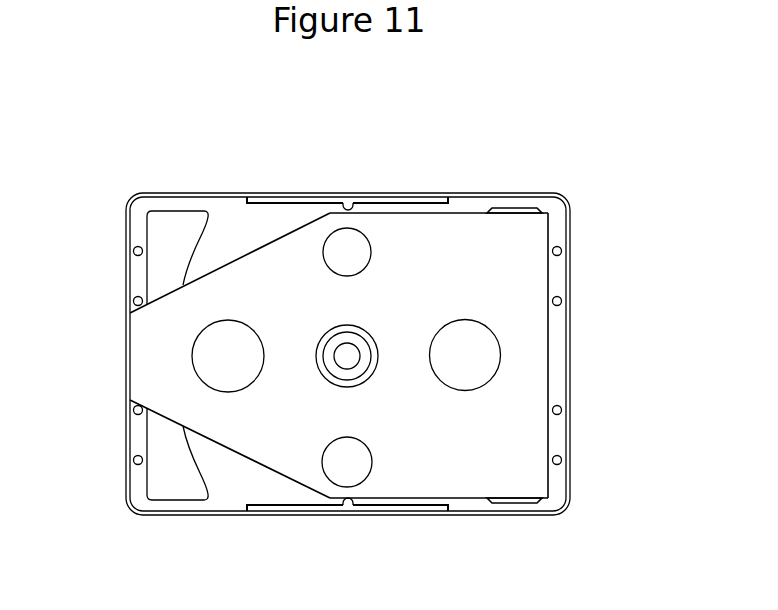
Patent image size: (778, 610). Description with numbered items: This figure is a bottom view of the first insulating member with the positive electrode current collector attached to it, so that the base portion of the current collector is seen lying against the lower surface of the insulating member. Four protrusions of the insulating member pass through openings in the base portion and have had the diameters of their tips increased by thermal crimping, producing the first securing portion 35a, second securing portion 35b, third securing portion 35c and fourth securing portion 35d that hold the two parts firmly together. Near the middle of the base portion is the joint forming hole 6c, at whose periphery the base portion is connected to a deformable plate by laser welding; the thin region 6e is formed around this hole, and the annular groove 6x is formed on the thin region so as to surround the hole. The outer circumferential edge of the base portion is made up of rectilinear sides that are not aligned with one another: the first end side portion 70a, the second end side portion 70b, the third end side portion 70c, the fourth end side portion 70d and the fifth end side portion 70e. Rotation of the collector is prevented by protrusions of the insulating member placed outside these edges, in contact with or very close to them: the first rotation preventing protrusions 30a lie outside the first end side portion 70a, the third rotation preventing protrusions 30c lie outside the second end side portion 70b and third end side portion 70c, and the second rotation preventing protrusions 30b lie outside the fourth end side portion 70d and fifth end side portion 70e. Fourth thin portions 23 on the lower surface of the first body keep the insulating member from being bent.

The fourth thin portion 23 is at (172, 481).
The first rotation preventing protrusion 30a is at (562, 251).
The second rotation preventing protrusion 30b is at (132, 303).
The third rotation preventing protrusion 30c is at (348, 198).
The first securing portion 35a is at (227, 343).
The second securing portion 35b is at (477, 358).
The third securing portion 35c is at (335, 457).
The fourth securing portion 35d is at (340, 250).
The joint forming hole 6c is at (362, 357).
The thin region 6e is at (330, 352).
The annular groove 6x is at (373, 345).
The first end side portion 70a is at (549, 337).
The second end side portion 70b is at (394, 510).
The third end side portion 70c is at (412, 208).
The fourth end side portion 70d is at (232, 452).
The fifth end side portion 70e is at (236, 257).